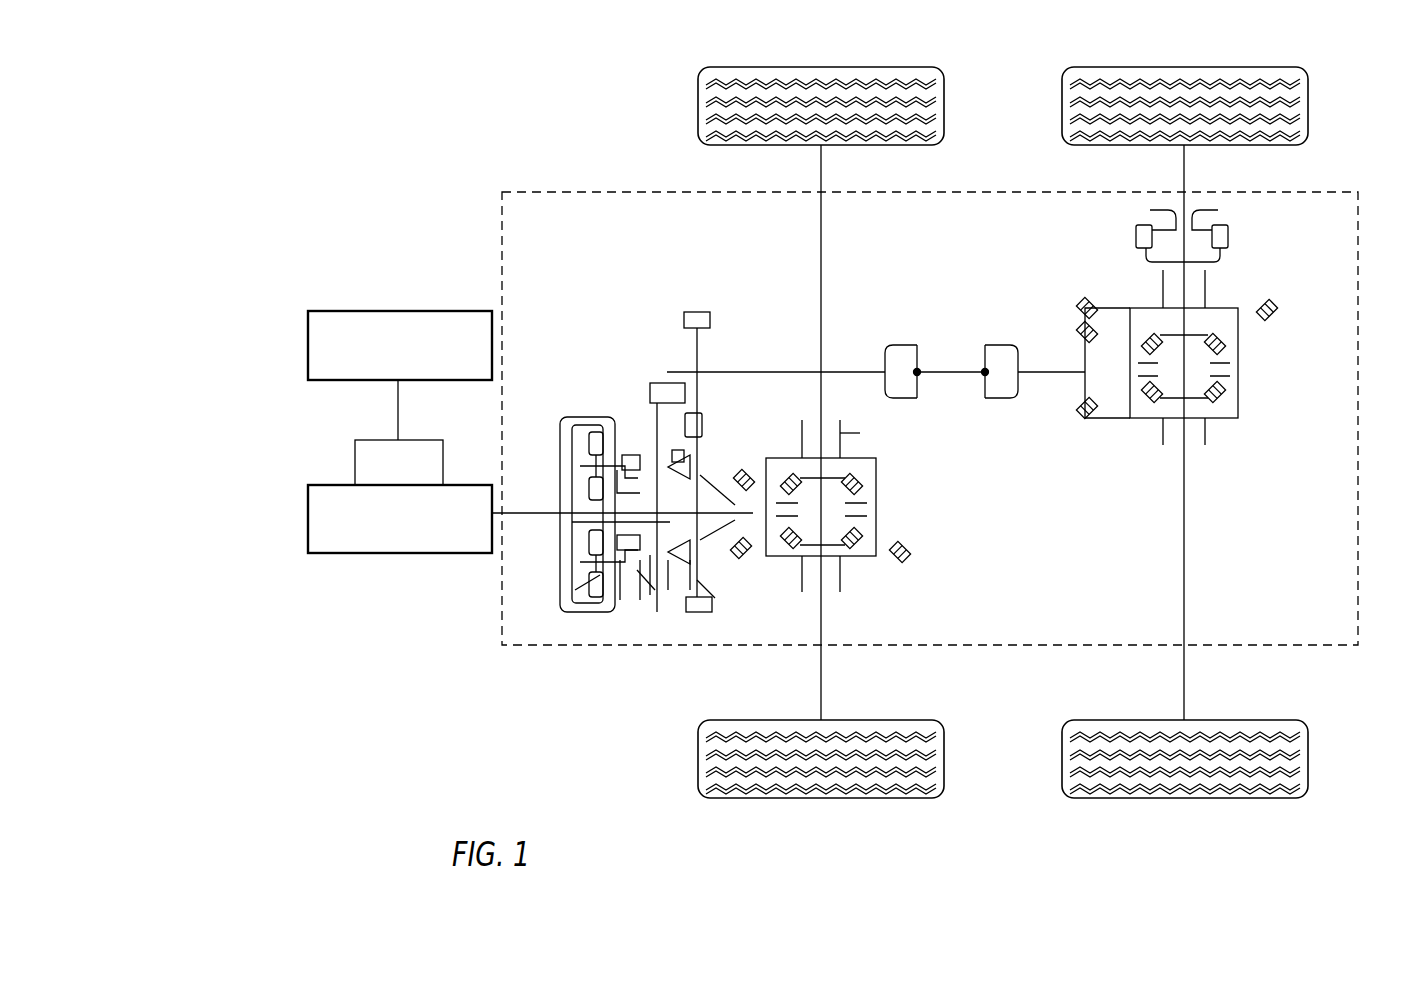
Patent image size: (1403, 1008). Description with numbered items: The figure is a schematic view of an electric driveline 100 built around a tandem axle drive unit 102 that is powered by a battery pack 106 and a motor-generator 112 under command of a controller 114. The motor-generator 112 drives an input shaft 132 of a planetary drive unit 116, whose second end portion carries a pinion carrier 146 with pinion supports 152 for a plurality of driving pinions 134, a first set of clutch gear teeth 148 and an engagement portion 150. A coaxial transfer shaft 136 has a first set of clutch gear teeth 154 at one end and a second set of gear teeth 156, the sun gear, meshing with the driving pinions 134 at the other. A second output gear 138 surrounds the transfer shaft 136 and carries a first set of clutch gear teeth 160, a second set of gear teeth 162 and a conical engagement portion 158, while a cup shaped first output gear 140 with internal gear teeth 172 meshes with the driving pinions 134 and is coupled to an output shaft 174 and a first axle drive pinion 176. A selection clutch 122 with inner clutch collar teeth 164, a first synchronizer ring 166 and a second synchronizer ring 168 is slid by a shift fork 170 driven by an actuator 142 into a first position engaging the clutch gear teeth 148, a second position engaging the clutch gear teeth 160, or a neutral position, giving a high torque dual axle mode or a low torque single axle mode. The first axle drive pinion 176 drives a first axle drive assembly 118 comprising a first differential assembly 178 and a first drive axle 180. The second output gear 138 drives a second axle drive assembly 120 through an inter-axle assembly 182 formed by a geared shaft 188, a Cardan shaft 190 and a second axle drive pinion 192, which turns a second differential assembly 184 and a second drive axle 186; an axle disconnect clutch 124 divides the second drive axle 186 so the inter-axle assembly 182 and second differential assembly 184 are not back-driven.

The electric driveline 100 is at (240, 115).
The tandem axle drive unit 102 is at (500, 190).
The battery pack 106 is at (308, 340).
The motor-generator 112 is at (366, 553).
The controller 114 is at (355, 462).
The planetary drive unit 116 is at (540, 628).
The first axle drive assembly 118 is at (852, 625).
The second axle drive assembly 120 is at (1220, 495).
The selection clutch 122 is at (650, 425).
The axle disconnect clutch 124 is at (1222, 212).
The input shaft 132 is at (545, 512).
The driving pinions 134 is at (622, 600).
The transfer shaft 136 is at (705, 600).
The second output gear 138 is at (703, 438).
The first output gear 140 is at (590, 585).
The actuator 142 is at (680, 385).
The pinion carrier 146 is at (632, 600).
The first set of clutch gear teeth 148 is at (620, 450).
The engagement portion 150 is at (645, 600).
The pinion supports 152 is at (590, 460).
The first set of clutch gear teeth 154 is at (660, 600).
The second set of gear teeth 156 is at (590, 545).
The engagement portion 158 is at (700, 470).
The first set of clutch gear teeth 160 is at (712, 612).
The second set of gear teeth 162 is at (700, 425).
The inner clutch collar teeth 164 is at (735, 562).
The first synchronizer ring 166 is at (640, 460).
The second synchronizer ring 168 is at (690, 595).
The shift fork 170 is at (660, 415).
The gear teeth 172 is at (598, 595).
The output shaft 174 is at (842, 445).
The first axle drive pinion 176 is at (840, 452).
The first differential assembly 178 is at (876, 498).
The first drive axle 180 is at (828, 292).
The inter-axle assembly 182 is at (1000, 305).
The second differential assembly 184 is at (1238, 400).
The second drive axle 186 is at (1184, 558).
The geared shaft 188 is at (815, 310).
The Cardan shaft 190 is at (952, 373).
The second axle drive pinion 192 is at (1085, 378).